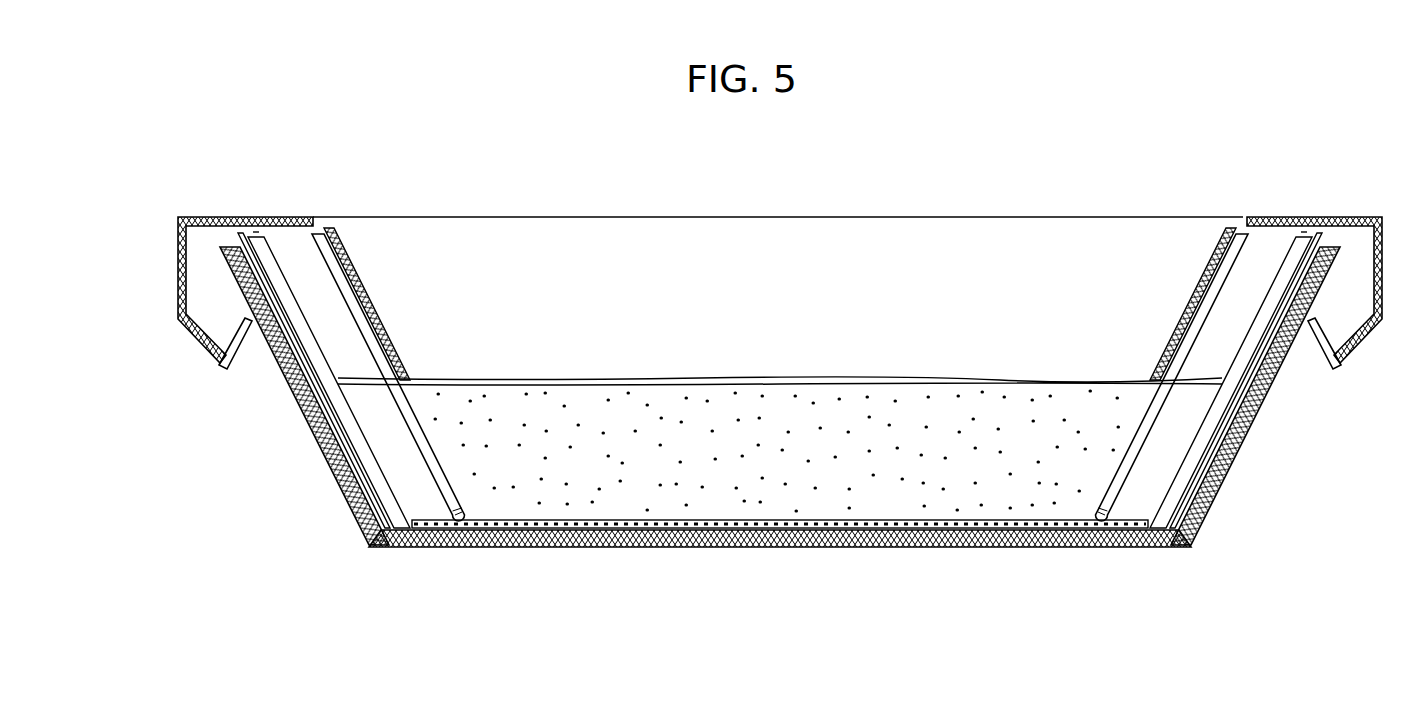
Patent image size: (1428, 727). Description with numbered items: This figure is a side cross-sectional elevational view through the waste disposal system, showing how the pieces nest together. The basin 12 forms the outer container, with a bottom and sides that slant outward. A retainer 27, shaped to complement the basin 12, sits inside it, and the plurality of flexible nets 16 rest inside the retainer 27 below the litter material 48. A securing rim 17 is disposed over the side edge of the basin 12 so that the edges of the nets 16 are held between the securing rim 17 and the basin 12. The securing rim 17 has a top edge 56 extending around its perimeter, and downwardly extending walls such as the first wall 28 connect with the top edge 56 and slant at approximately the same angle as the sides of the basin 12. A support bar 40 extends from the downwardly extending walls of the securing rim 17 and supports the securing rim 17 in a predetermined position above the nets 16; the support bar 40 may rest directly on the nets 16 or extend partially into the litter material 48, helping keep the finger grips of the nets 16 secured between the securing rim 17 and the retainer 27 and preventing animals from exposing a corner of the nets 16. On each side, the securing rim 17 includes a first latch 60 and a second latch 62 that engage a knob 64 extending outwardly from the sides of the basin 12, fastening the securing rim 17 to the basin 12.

The basin 12 is at (362, 535).
The flexible nets 16 is at (685, 512).
The securing rim 17 is at (318, 232).
The retainer 27 is at (345, 385).
The first wall 28 is at (705, 275).
The support bar 40 is at (268, 272).
The litter material 48 is at (760, 378).
The top edge 56 is at (229, 217).
The first latch 60 is at (210, 350).
The second latch 62 is at (1332, 356).
The knob 64 is at (242, 326).